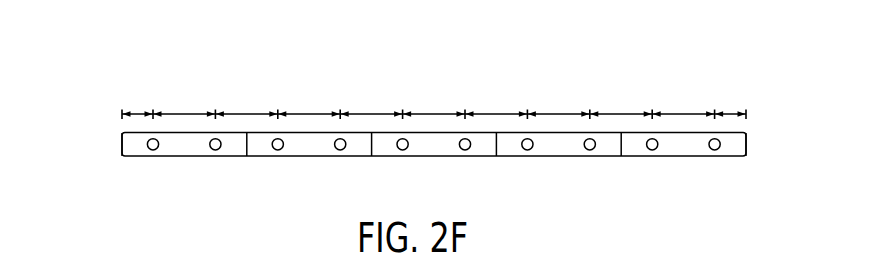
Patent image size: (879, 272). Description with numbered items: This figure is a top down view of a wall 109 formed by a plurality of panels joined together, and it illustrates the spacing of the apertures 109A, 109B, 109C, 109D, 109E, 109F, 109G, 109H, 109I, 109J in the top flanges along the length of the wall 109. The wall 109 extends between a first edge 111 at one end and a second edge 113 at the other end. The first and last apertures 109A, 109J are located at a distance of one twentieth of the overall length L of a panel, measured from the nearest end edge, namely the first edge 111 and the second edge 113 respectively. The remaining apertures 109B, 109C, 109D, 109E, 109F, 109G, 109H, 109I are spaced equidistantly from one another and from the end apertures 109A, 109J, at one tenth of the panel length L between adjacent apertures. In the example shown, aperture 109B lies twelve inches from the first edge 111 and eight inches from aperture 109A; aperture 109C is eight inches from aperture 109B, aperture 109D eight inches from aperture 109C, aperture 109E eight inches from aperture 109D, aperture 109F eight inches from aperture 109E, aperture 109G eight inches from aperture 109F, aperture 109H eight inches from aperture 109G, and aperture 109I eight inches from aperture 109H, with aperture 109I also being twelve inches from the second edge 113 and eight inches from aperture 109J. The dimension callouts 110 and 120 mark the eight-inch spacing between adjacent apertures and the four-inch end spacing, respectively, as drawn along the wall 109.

The wall 109 is at (416, 110).
The first edge 111 is at (121, 148).
The second edge 113 is at (748, 146).
The hole spacing length 110 is at (684, 68).
The end spacing length 120 is at (743, 68).
The aperture 109A is at (154, 150).
The aperture 109B is at (216, 150).
The aperture 109C is at (278, 150).
The aperture 109D is at (341, 150).
The aperture 109E is at (403, 150).
The aperture 109F is at (466, 150).
The aperture 109G is at (528, 150).
The aperture 109H is at (590, 150).
The aperture 109I is at (653, 150).
The aperture 109J is at (715, 150).